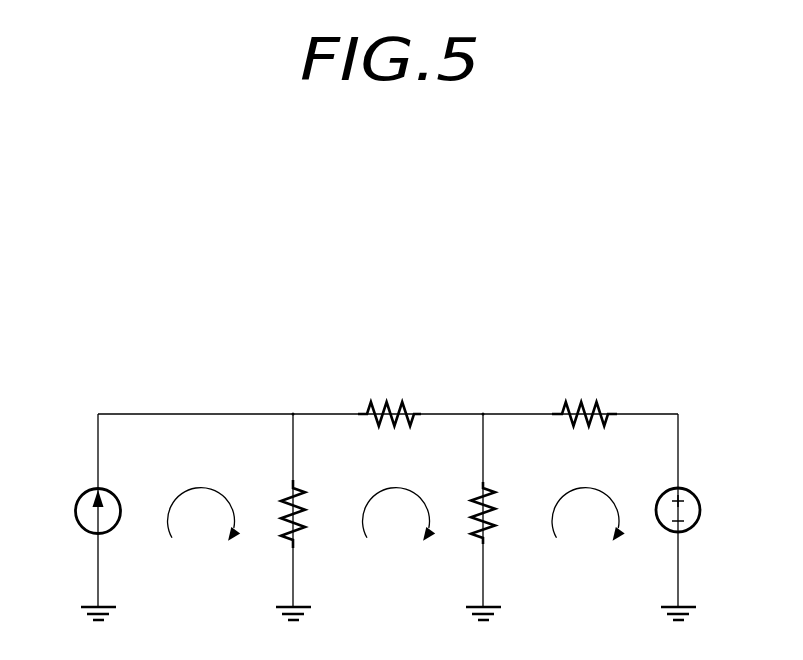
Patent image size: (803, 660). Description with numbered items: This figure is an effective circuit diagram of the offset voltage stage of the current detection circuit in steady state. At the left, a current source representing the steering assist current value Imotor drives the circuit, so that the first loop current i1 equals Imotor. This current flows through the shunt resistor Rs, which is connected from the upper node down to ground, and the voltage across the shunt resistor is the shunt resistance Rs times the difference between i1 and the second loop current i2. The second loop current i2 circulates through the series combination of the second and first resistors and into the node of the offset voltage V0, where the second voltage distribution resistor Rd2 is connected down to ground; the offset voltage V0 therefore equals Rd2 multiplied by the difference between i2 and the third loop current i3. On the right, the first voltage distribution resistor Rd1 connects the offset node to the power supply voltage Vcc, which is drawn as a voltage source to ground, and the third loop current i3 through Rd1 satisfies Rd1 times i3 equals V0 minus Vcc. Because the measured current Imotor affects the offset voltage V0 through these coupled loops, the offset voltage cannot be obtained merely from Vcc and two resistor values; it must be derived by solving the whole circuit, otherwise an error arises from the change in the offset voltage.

The steering assist current value Imotor is at (77, 511).
The first loop current i1 is at (204, 514).
The second loop current i2 is at (399, 514).
The third loop current i3 is at (588, 514).
The offset voltage V0 is at (486, 403).
The shunt resistor Rs is at (303, 514).
The second voltage distribution resistor Rd2 is at (497, 513).
The first voltage distribution resistor Rd1 is at (584, 403).
The power supply voltage Vcc is at (693, 510).